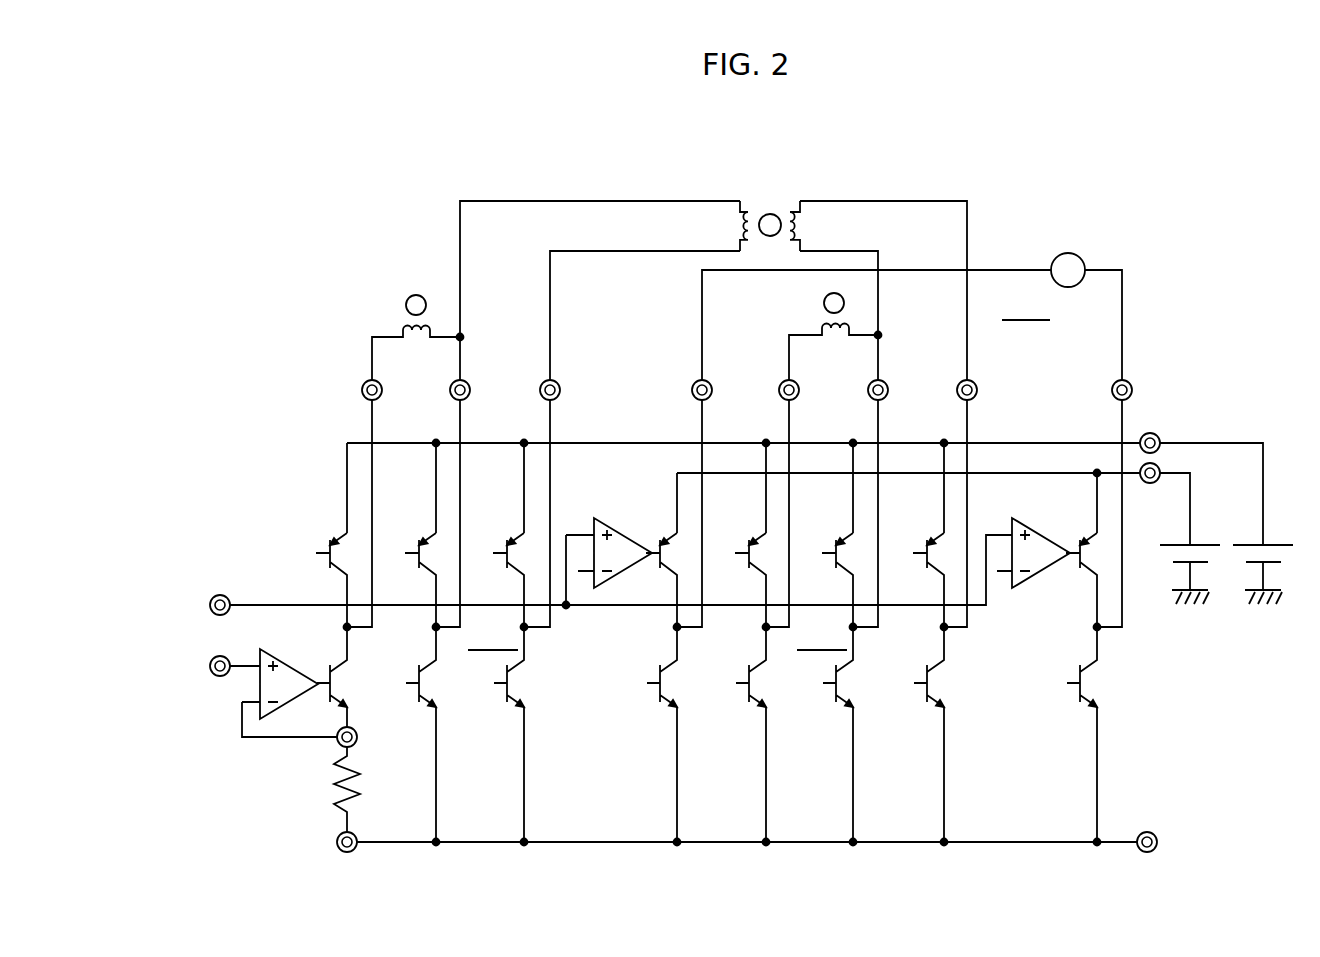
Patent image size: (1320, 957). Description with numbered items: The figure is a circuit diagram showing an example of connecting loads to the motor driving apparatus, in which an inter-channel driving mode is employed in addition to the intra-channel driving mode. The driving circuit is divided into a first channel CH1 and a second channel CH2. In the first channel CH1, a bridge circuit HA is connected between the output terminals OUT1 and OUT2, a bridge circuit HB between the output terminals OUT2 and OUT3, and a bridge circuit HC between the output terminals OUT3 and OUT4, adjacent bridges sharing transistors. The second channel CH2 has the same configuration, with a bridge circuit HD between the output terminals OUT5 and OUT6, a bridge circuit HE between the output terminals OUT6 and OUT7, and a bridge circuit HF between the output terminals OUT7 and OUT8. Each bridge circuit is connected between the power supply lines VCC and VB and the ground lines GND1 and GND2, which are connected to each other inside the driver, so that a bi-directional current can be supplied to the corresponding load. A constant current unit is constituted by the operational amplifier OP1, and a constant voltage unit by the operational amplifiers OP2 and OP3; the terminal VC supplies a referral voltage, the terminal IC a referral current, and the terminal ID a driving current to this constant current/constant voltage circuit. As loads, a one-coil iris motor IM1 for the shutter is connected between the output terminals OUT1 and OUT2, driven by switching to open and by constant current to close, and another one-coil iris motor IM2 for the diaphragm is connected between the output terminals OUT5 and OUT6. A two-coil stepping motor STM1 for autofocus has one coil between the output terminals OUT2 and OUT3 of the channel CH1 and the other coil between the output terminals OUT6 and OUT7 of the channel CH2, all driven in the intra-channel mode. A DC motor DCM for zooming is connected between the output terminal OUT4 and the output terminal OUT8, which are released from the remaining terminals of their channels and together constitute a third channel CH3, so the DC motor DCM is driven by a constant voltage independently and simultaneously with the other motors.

The output terminal OUT1 is at (338, 378).
The output terminal OUT2 is at (428, 378).
The output terminal OUT3 is at (518, 378).
The output terminal OUT4 is at (671, 378).
The output terminal OUT5 is at (757, 378).
The output terminal OUT6 is at (845, 378).
The output terminal OUT7 is at (935, 378).
The output terminal OUT8 is at (1090, 378).
The bridge circuit HA is at (417, 521).
The bridge circuit HB is at (505, 521).
The bridge circuit HC is at (643, 521).
The bridge circuit HD is at (835, 521).
The bridge circuit HE is at (925, 521).
The bridge circuit HF is at (1063, 521).
The operational amplifier OP1 is at (292, 666).
The operational amplifier OP2 is at (623, 534).
The operational amplifier OP3 is at (1043, 534).
The iris motor IM1 is at (409, 288).
The iris motor IM2 is at (817, 302).
The stepping motor STM1 is at (775, 206).
The DC motor DCM is at (1075, 242).
The channel CH1 is at (493, 637).
The channel CH2 is at (822, 636).
The third channel CH3 is at (1026, 305).
The power supply terminal VCC is at (1169, 429).
The power supply terminal VB is at (1162, 488).
The terminal VC is at (207, 592).
The terminal IC is at (212, 652).
The terminal ID is at (362, 737).
The ground terminal GND1 is at (308, 845).
The ground terminal GND2 is at (1184, 845).